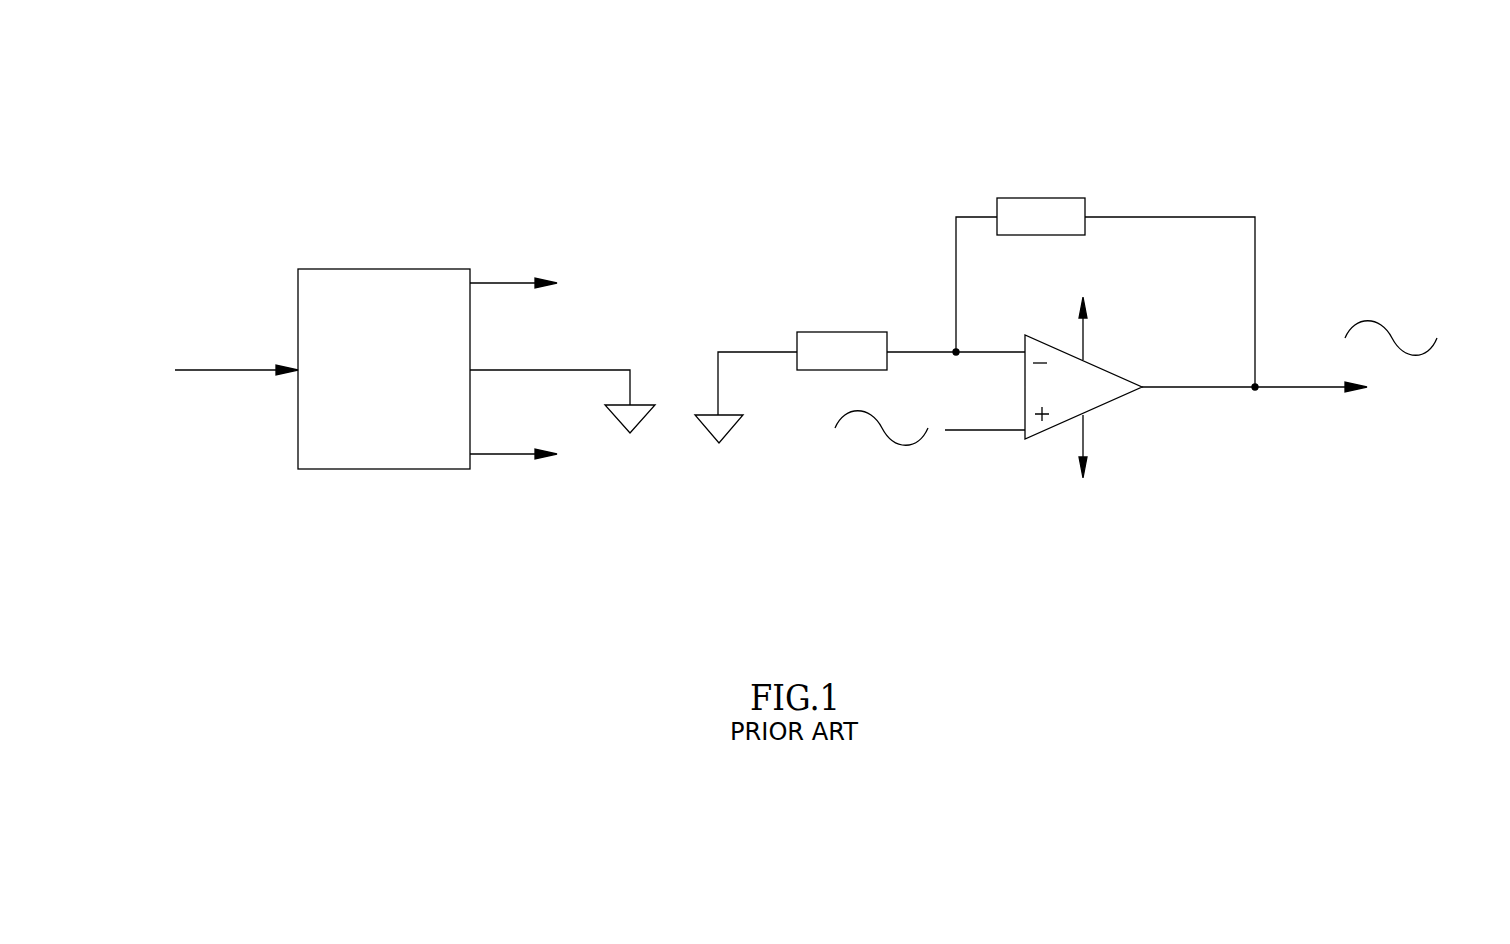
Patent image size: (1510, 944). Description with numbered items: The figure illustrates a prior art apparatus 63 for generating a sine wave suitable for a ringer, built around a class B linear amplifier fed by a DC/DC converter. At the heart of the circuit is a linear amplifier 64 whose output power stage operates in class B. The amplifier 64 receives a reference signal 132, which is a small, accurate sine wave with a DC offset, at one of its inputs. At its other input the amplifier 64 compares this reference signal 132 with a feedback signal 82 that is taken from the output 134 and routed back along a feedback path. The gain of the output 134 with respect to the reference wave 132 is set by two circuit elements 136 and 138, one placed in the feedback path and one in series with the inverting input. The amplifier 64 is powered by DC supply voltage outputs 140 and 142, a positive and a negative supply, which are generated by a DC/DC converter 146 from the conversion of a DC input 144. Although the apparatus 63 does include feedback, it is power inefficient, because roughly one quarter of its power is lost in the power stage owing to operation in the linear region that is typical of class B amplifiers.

The prior art apparatus 63 is at (963, 97).
The linear amplifier 64 is at (1062, 426).
The feedback signal 82 is at (1255, 300).
The reference signal 132 is at (982, 430).
The output 134 is at (1303, 388).
The circuit element 136 is at (1020, 275).
The circuit element 138 is at (860, 387).
The DC supply voltage output 140 is at (487, 283).
The DC supply voltage output 142 is at (493, 456).
The DC input 144 is at (237, 378).
The DC/DC converter 146 is at (380, 268).